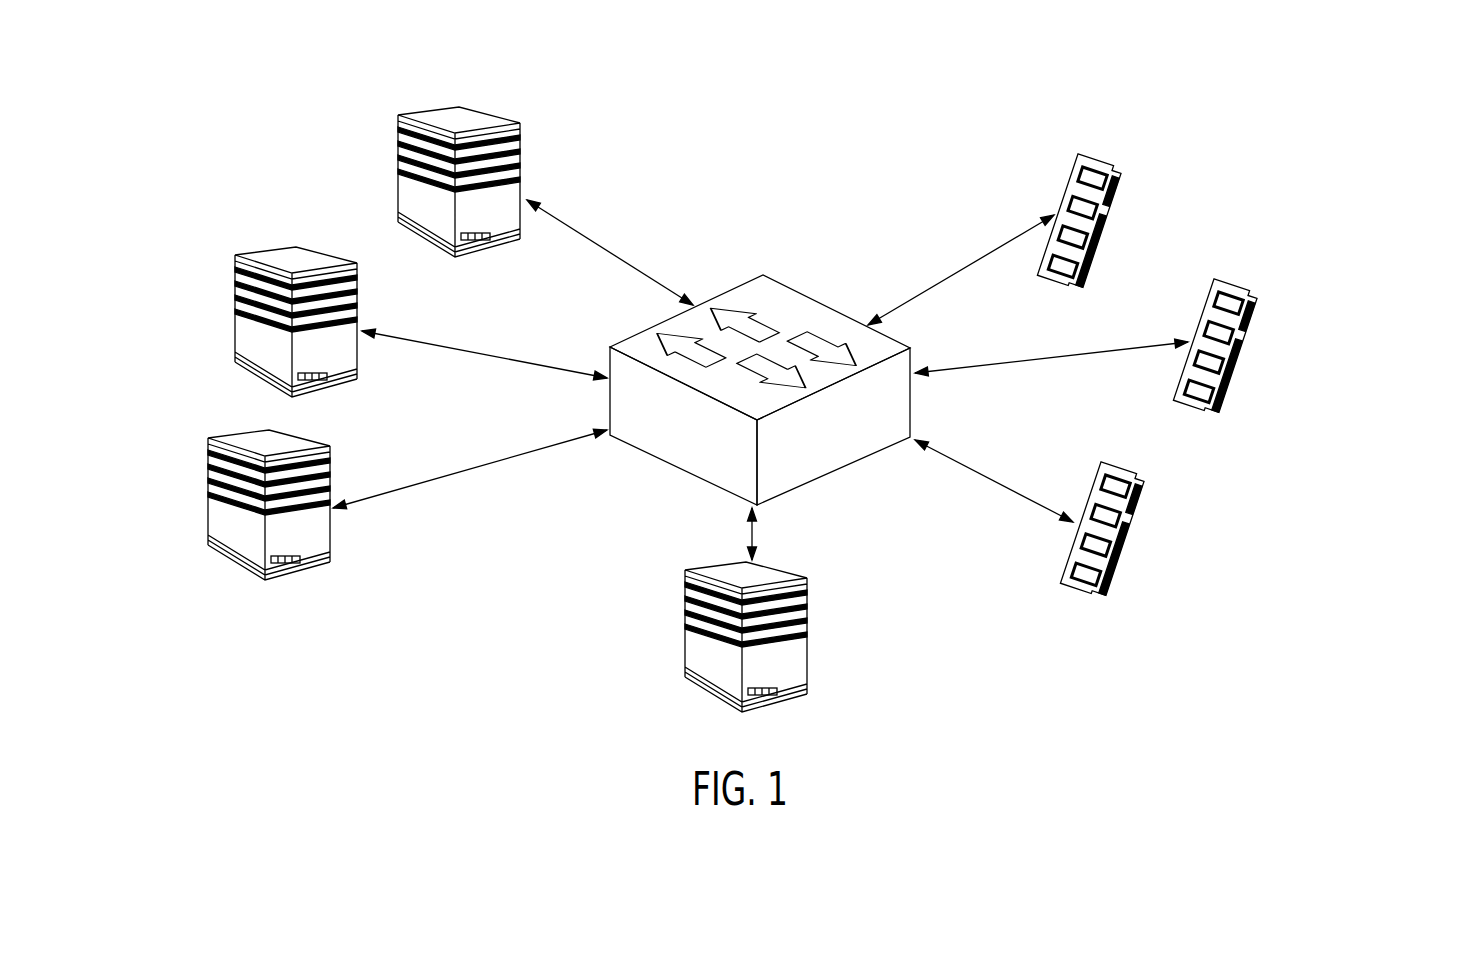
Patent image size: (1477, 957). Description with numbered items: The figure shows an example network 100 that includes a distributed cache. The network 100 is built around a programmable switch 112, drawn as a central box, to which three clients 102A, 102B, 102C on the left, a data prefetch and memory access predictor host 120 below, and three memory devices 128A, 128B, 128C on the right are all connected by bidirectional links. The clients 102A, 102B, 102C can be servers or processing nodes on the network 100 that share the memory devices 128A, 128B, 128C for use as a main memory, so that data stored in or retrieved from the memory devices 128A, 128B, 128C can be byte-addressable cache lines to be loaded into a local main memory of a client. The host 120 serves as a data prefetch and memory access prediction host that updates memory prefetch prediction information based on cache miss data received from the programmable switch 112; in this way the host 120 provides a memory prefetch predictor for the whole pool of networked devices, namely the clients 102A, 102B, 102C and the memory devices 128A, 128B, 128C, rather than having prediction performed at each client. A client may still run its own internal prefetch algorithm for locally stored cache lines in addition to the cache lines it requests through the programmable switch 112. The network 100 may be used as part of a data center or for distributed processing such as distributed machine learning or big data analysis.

The network 100 is at (1032, 125).
The client 102A is at (398, 183).
The client 102B is at (237, 332).
The client 102C is at (208, 503).
The programmable switch 112 is at (779, 283).
The data prefetch and memory access predictor host 120 is at (808, 626).
The memory device 128A is at (1123, 198).
The memory device 128B is at (1260, 330).
The memory device 128C is at (1130, 540).